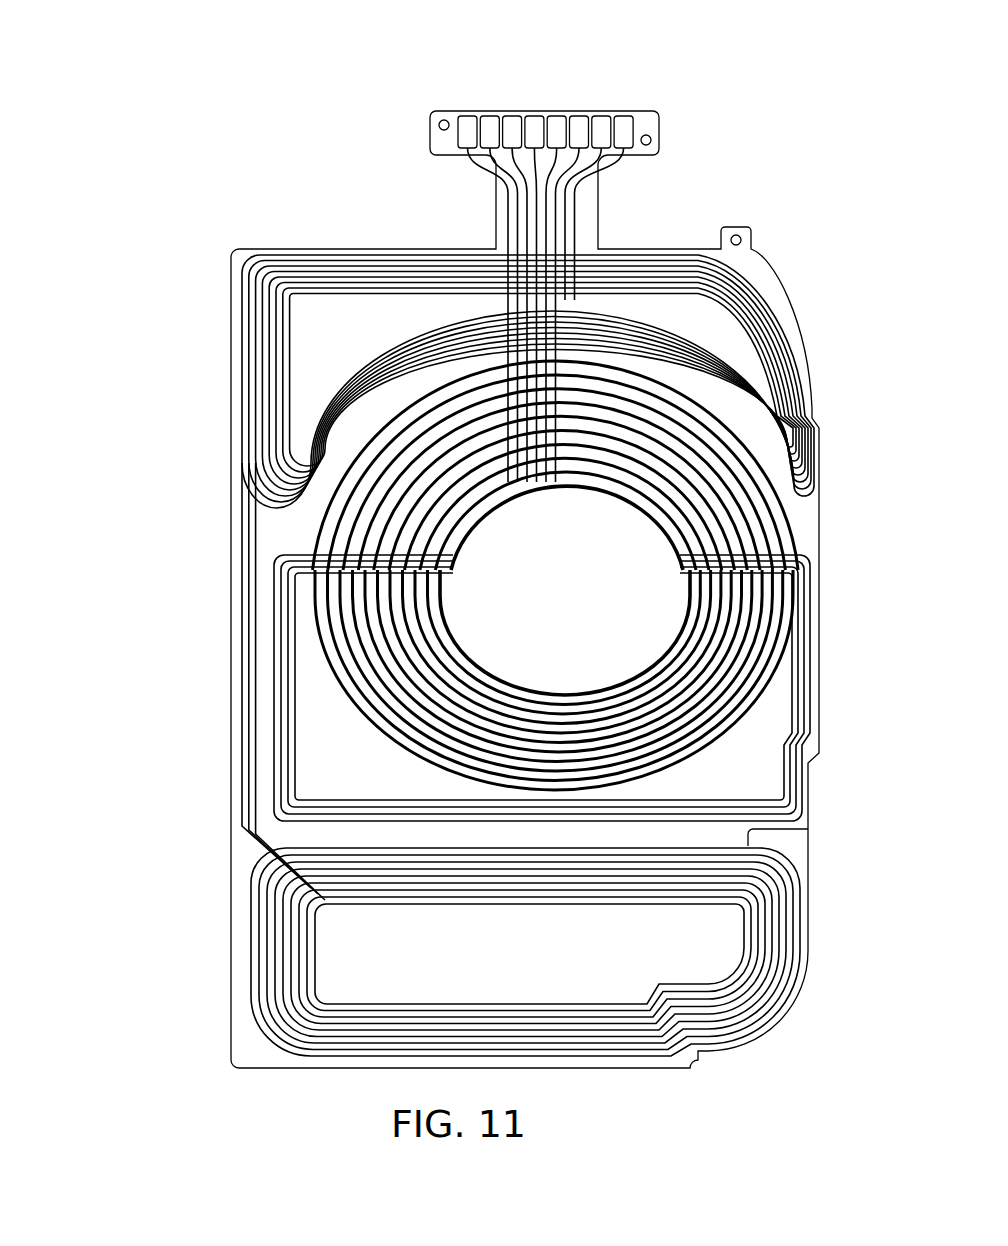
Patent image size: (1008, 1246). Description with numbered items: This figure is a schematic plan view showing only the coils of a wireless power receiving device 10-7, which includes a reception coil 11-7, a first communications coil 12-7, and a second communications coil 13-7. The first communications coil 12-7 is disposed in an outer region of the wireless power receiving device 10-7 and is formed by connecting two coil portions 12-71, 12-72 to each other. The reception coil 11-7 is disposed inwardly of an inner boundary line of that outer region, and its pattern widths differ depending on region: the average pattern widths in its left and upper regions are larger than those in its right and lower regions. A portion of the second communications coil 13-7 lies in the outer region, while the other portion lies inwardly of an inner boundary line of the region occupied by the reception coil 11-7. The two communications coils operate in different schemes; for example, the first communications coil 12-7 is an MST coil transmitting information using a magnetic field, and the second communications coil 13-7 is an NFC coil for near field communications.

The wireless power receiving device 10-7 is at (562, 33).
The reception coil 11-7 is at (777, 514).
The first communications coil 12-7 is at (416, 655).
The coil portion 12-71 is at (234, 456).
The coil portion 12-72 is at (449, 952).
The second communications coil 13-7 is at (800, 698).